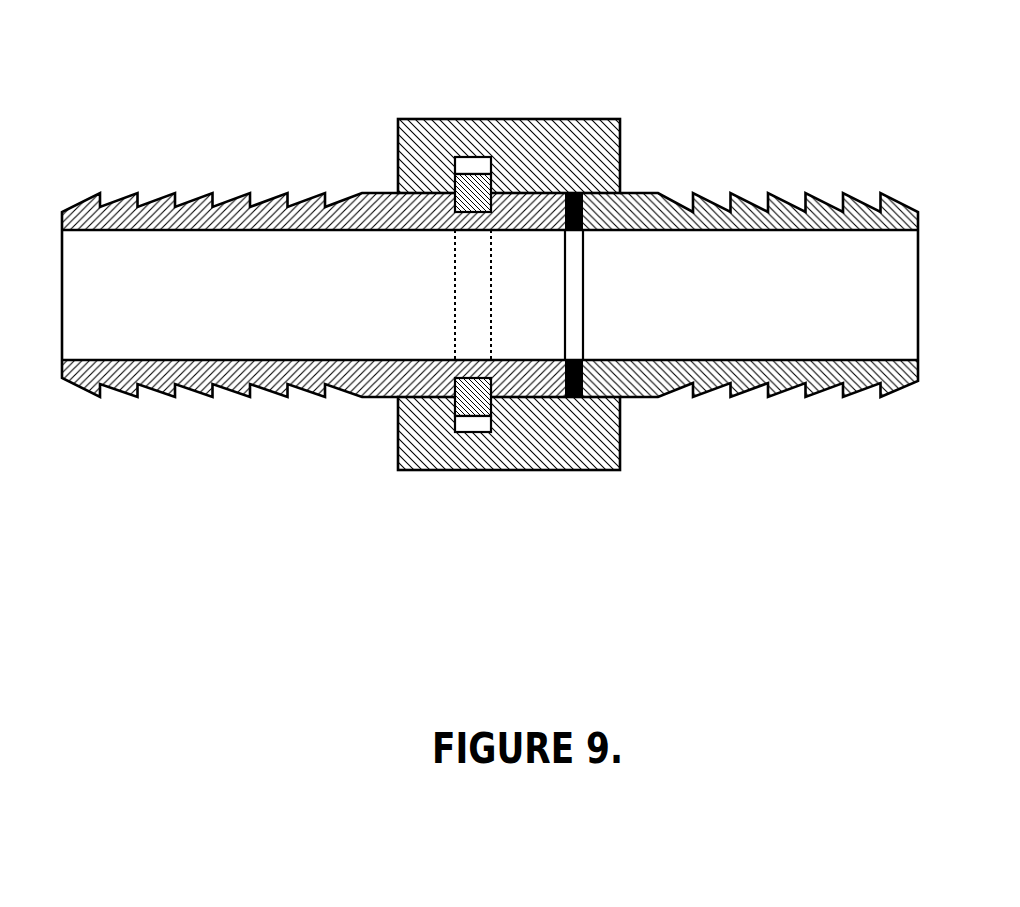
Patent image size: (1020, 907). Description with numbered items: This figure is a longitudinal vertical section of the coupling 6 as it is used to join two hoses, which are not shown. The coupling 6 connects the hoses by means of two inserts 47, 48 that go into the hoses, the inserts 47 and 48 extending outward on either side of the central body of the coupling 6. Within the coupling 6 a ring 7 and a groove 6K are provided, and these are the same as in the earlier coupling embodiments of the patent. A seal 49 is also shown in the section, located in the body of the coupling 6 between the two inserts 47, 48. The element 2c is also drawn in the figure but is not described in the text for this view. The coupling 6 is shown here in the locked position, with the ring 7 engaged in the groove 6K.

The insert 47 is at (237, 203).
The insert 48 is at (720, 377).
The coupling 6 is at (552, 148).
The groove 6K is at (472, 157).
The passage through pipe wall 2c is at (472, 407).
The ring 7 is at (467, 403).
The seal 49 is at (577, 397).